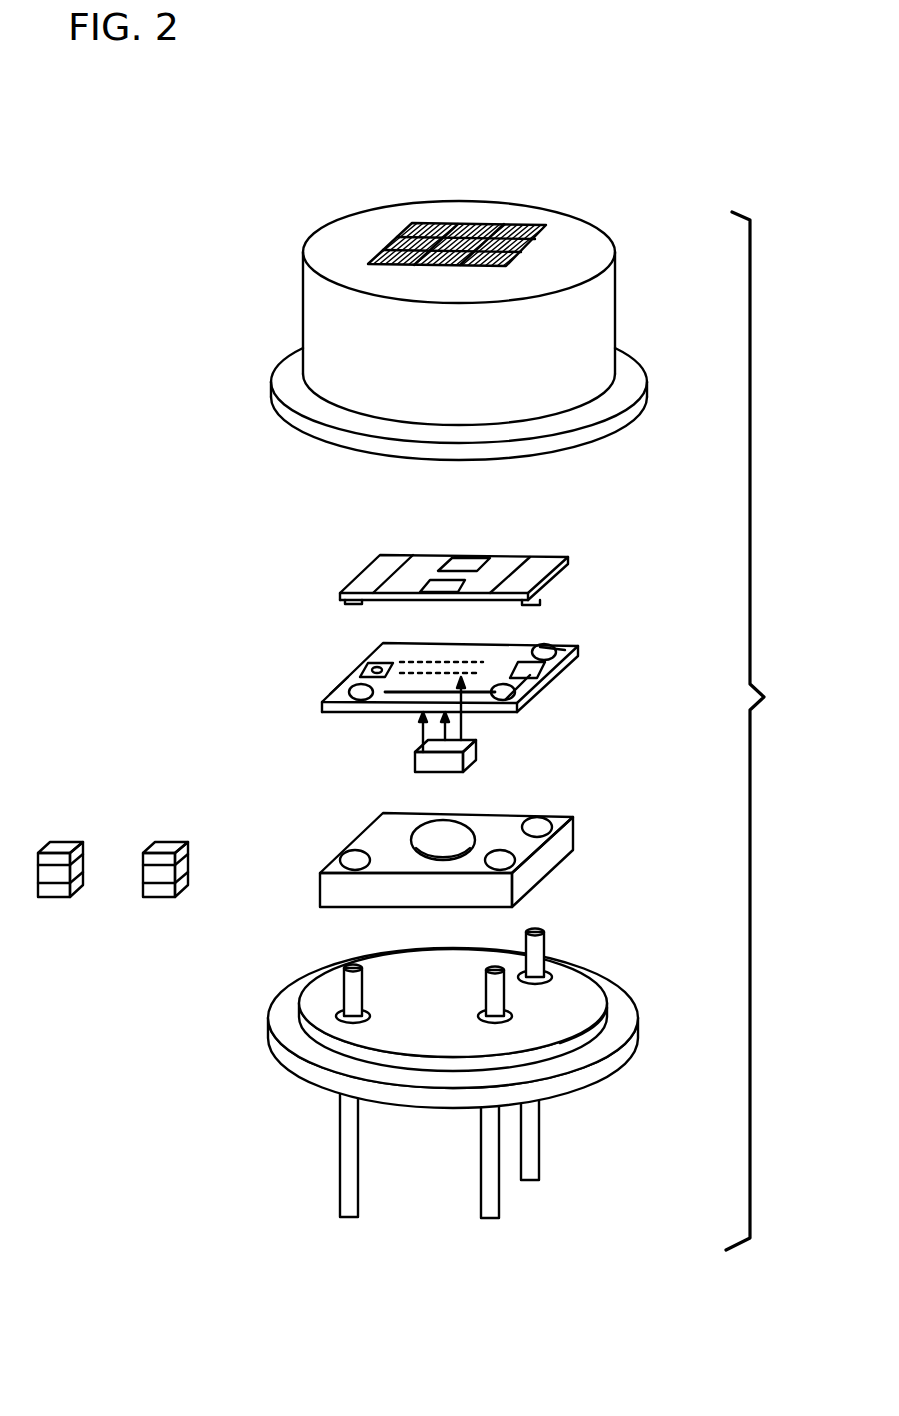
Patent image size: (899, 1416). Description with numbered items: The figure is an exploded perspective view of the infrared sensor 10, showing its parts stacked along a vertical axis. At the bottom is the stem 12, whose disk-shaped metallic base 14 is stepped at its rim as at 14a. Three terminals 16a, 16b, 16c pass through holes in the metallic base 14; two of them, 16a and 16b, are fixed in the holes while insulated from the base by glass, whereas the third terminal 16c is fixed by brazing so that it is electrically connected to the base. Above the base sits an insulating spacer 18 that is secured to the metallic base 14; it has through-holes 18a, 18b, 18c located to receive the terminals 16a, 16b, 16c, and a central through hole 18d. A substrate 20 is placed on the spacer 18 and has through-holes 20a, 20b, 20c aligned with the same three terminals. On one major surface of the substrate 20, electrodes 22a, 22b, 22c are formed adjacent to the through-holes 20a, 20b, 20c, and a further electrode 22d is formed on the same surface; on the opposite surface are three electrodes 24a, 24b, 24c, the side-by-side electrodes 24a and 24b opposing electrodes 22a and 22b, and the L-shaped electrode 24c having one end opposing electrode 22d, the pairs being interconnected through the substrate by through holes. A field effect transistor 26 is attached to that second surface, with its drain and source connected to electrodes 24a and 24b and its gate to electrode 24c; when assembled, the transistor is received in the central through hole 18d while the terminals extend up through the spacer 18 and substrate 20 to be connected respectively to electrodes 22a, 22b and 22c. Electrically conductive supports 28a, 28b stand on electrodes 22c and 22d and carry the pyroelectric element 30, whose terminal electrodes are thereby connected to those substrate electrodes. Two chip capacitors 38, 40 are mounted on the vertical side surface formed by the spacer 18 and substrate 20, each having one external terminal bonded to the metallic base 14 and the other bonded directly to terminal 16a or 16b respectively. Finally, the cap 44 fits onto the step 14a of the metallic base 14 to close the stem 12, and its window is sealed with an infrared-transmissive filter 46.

The infrared sensor 10 is at (190, 187).
The stem 12 is at (636, 1030).
The metallic base 14 is at (568, 980).
The step 14a is at (614, 999).
The terminal 16a is at (340, 1172).
The terminal 16b is at (485, 1190).
The terminal 16c is at (530, 1167).
The spacer 18 is at (565, 840).
The through-hole 18a is at (352, 858).
The through-hole 18b is at (545, 815).
The through-hole 18c is at (505, 853).
The central through hole 18d is at (458, 834).
The substrate 20 is at (325, 690).
The through-hole 20a is at (355, 688).
The through-hole 20b is at (515, 698).
The through-hole 20c is at (548, 650).
The electrode 22a is at (368, 718).
The electrode 22b is at (507, 710).
The electrode 22c is at (548, 668).
The electrode 22d is at (375, 667).
The electrode 24a is at (422, 712).
The electrode 24b is at (446, 715).
The electrode 24c is at (483, 662).
The field effect transistor 26 is at (418, 770).
The support 28a is at (555, 598).
The support 28b is at (342, 603).
The pyroelectric element 30 is at (538, 557).
The capacitor 38 is at (62, 848).
The capacitor 40 is at (167, 848).
The cap 44 is at (590, 312).
The infrared-transmissive filter 46 is at (480, 226).